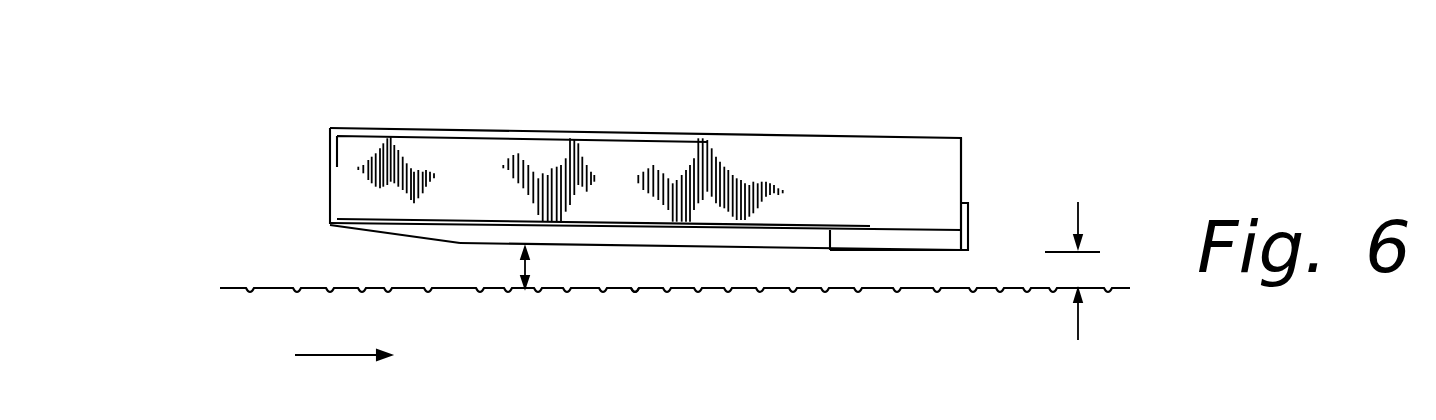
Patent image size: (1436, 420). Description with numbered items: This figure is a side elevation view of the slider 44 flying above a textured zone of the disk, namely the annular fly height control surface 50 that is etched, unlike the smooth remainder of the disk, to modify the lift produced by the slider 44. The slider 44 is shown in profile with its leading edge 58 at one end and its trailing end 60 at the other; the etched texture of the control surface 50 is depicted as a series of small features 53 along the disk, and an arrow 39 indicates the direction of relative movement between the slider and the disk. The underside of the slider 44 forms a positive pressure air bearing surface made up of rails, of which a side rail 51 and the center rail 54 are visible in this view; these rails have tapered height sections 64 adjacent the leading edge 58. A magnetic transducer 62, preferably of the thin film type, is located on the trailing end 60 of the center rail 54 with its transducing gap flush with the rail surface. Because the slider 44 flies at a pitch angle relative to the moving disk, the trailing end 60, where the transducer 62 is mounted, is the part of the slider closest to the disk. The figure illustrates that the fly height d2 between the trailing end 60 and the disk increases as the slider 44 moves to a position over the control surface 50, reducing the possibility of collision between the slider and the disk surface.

The slider 44 is at (763, 123).
The leading edge 58 is at (330, 148).
The trailing end 60 is at (962, 158).
The magnetic transducer 62 is at (968, 213).
The tapered height sections 64 is at (355, 232).
The side rail 51 is at (597, 249).
The center rail 54 is at (883, 250).
The fly height control surface 50 is at (360, 290).
The texture bumps 53 is at (630, 290).
The direction of disk motion 39 is at (333, 356).
The fly height d2 is at (1072, 295).